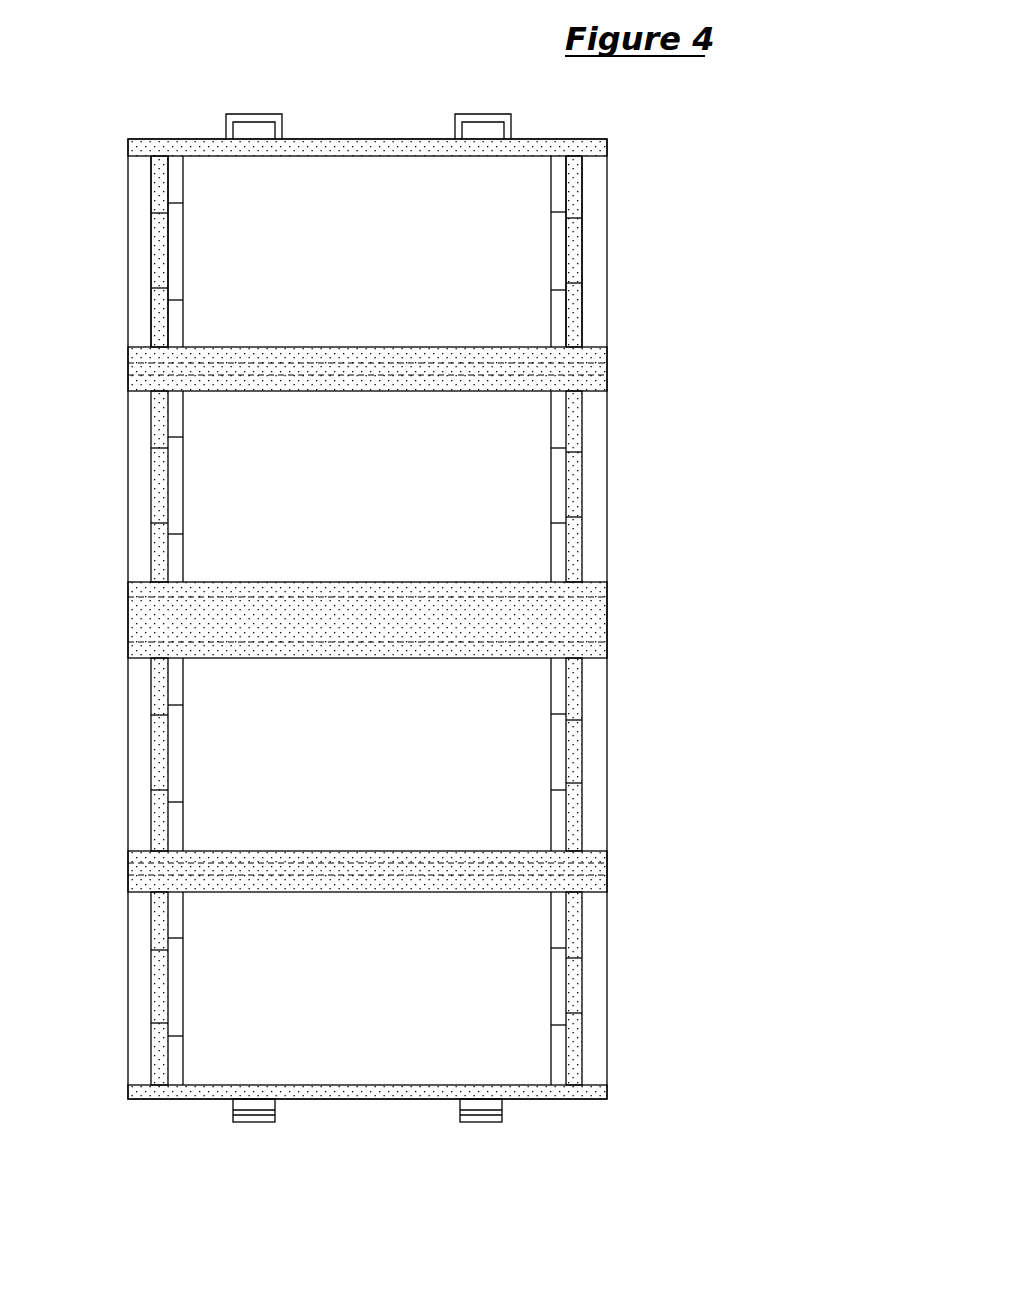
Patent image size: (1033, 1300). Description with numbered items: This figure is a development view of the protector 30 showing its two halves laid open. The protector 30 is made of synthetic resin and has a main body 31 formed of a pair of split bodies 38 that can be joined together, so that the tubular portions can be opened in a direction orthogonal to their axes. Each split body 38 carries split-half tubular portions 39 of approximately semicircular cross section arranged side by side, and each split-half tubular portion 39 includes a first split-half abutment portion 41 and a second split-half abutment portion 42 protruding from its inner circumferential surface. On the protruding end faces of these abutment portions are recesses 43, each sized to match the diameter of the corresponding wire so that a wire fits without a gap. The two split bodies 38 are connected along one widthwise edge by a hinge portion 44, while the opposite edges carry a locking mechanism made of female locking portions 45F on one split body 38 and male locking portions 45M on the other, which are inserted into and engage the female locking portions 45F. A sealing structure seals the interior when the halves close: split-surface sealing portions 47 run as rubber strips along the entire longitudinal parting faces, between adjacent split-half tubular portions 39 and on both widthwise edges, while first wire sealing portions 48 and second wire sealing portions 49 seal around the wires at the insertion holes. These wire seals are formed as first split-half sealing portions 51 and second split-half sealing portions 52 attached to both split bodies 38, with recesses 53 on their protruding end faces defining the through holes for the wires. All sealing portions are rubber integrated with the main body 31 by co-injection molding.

The protector 30 is at (67, 113).
The main body 31 is at (341, 190).
The split body 38 is at (512, 205).
The split-half tubular portion 39 is at (398, 195).
The first split-half abutment portion 41 is at (557, 692).
The second split-half abutment portion 42 is at (177, 683).
The recess 43 is at (175, 228).
The hinge portion 44 is at (385, 608).
The female locking portion 45F is at (249, 113).
The male locking portion 45M is at (253, 1122).
The split-surface sealing portion 47 is at (245, 588).
The first wire sealing portion 48 is at (573, 1055).
The second wire sealing portion 49 is at (162, 1058).
The first split-half sealing portion 51 is at (160, 320).
The second split-half sealing portion 52 is at (573, 315).
The recess 53 is at (157, 262).